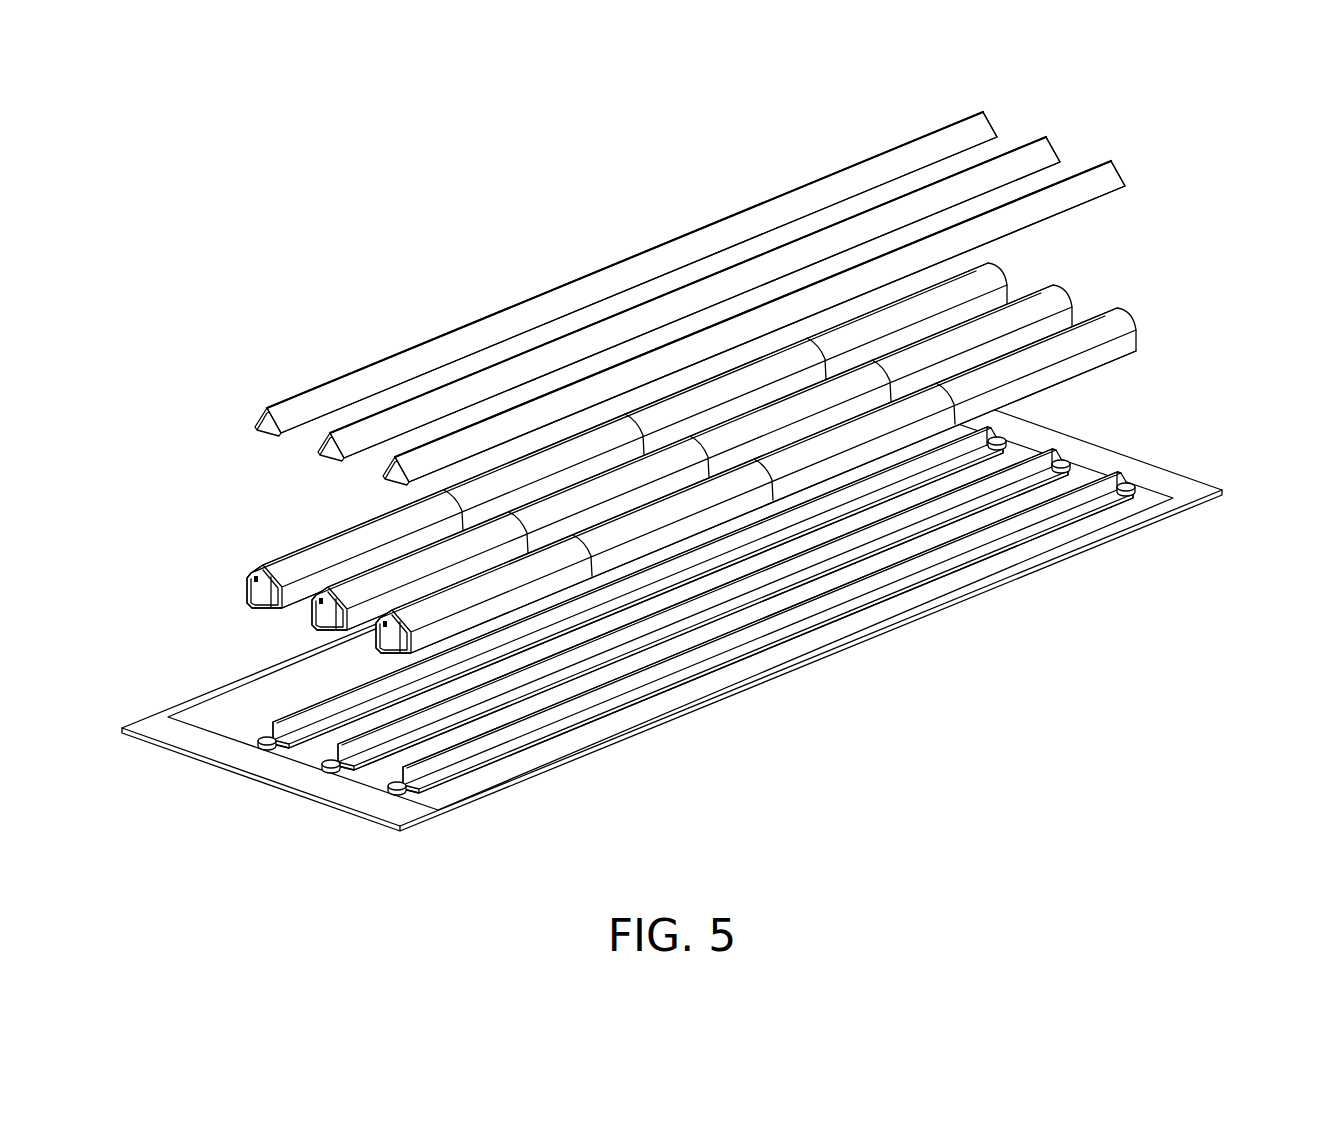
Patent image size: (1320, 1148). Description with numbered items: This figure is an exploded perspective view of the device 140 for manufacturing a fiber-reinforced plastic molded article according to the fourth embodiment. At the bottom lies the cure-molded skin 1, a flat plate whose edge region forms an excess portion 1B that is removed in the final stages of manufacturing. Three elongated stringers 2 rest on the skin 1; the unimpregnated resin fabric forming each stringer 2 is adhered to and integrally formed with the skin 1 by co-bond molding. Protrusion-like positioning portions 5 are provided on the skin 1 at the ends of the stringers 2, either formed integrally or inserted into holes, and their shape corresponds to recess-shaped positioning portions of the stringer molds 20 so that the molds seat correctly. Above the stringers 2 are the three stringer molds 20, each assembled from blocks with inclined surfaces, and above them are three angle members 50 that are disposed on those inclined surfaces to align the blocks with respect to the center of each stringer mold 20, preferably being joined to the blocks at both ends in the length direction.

The device for manufacturing a fiber-reinforced plastic molded article 140 is at (1216, 153).
The skin 1 is at (697, 695).
The excess portion 1B is at (406, 812).
The stringer 2 is at (283, 717).
The positioning portions 5 is at (1003, 436).
The stringer mold 20 is at (1003, 270).
The angle member 50 is at (972, 127).